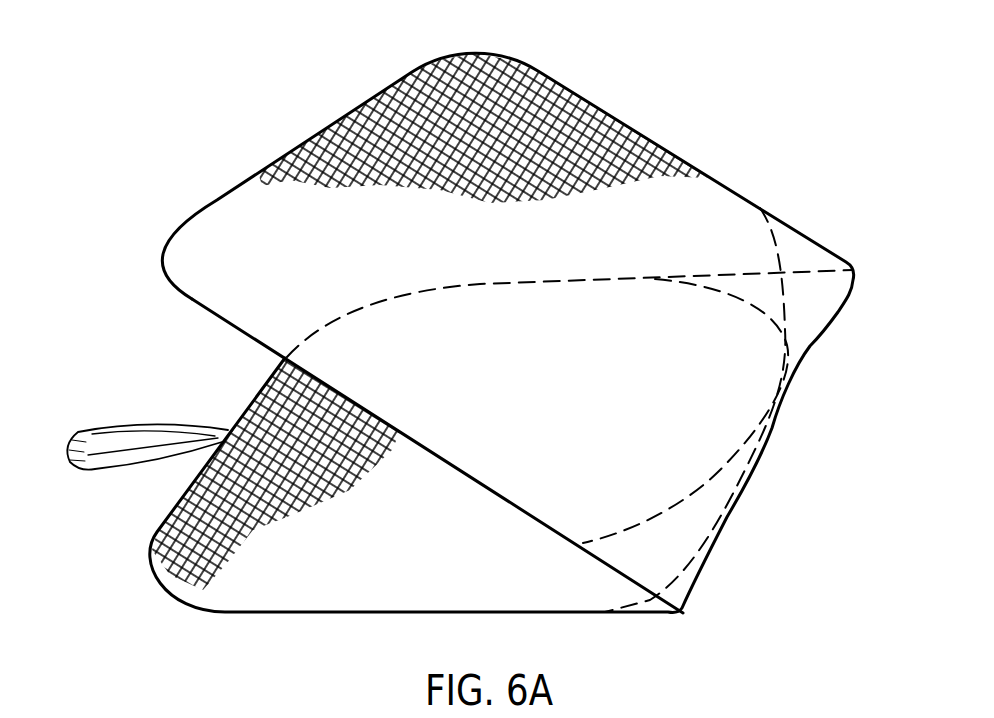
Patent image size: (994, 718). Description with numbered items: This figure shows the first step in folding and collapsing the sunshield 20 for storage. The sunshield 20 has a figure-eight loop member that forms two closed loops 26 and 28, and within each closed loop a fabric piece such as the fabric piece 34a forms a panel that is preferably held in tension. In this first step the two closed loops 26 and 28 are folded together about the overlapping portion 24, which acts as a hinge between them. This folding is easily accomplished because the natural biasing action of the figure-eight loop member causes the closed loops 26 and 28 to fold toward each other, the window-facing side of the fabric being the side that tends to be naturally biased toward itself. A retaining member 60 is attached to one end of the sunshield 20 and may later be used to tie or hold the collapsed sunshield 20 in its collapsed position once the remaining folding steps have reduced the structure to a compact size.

The sunshield 20 is at (752, 143).
The overlapping portion 24 is at (771, 430).
The closed loop 26 is at (452, 127).
The closed loop 28 is at (387, 538).
The fabric piece 34a is at (543, 127).
The retaining member 60 is at (93, 428).